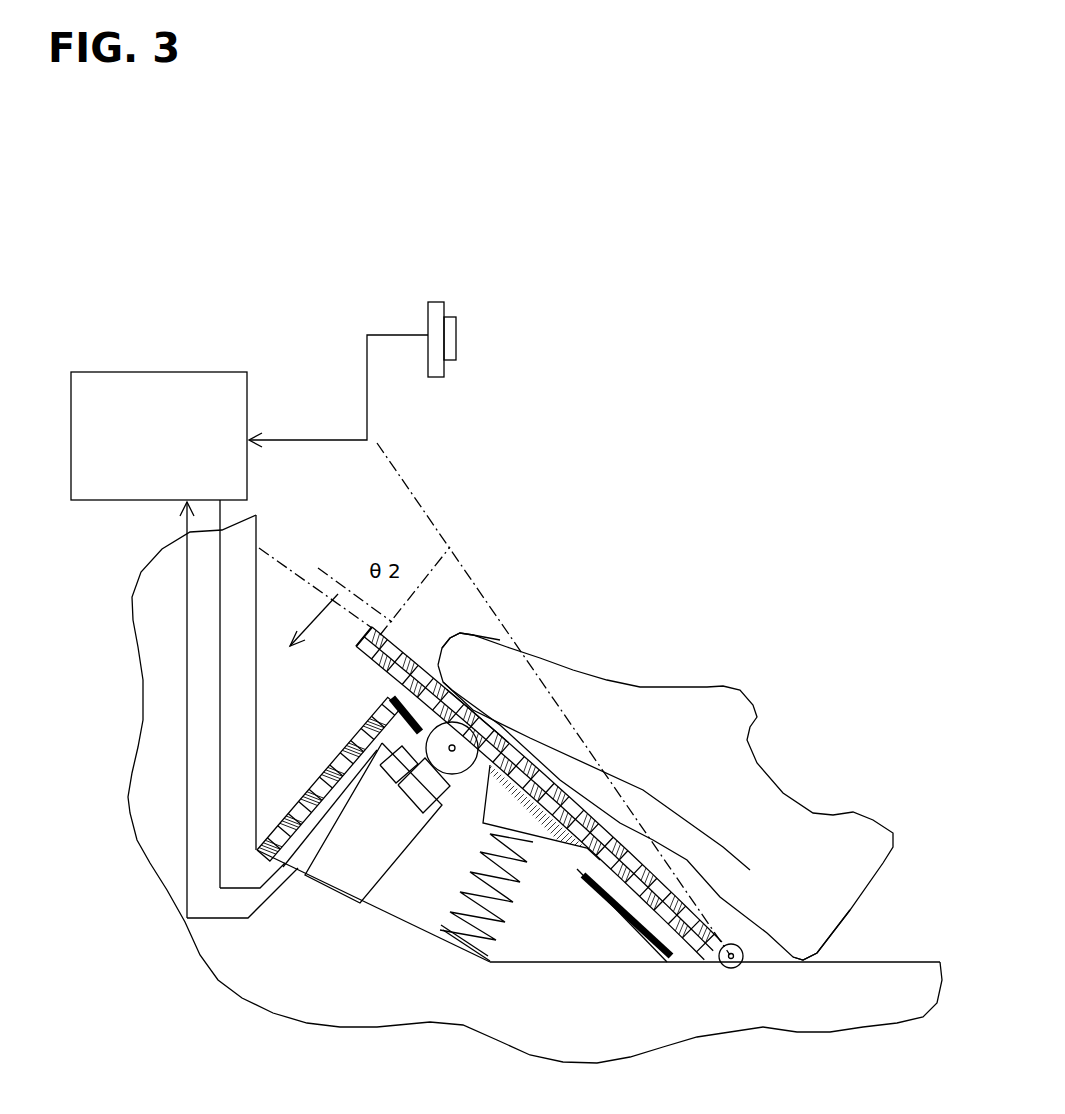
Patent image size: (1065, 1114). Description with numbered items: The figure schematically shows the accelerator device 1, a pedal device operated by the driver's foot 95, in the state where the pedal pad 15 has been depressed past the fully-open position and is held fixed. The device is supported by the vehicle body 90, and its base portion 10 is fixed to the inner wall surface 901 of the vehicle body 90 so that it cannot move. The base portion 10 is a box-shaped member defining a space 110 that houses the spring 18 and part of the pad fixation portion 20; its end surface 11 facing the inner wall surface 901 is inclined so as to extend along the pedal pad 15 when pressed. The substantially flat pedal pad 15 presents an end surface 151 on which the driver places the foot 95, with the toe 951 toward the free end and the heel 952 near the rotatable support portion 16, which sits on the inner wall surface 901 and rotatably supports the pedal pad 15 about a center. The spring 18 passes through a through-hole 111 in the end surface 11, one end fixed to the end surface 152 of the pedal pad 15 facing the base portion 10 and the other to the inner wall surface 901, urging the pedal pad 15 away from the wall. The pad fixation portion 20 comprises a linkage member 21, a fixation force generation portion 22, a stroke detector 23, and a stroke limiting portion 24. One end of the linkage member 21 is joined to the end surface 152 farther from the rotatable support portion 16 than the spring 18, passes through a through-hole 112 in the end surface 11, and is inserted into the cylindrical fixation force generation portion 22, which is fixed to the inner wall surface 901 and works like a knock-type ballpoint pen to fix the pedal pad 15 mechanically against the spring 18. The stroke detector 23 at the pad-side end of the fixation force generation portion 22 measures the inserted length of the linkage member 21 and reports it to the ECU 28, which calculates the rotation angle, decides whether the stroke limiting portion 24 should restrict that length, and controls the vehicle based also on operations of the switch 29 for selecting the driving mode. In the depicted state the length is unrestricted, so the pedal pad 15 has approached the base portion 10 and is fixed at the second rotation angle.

The accelerator device 1 is at (521, 488).
The base portion 10 is at (388, 700).
The end surface 11 is at (424, 672).
The pedal pad 15 is at (602, 814).
The rotatable support portion 16 is at (733, 946).
The spring 18 is at (490, 968).
The pad fixation portion 20 is at (342, 905).
The linkage member 21 is at (423, 736).
The fixation force generation portion 22 is at (395, 868).
The stroke detector 23 is at (420, 798).
The stroke limiting portion 24 is at (395, 768).
The engine control unit (ECU) 28 is at (100, 413).
The switch 29 is at (446, 335).
The vehicle body 90 is at (147, 808).
The foot 95 is at (762, 700).
The space 110 is at (415, 920).
The through-hole 111 is at (563, 868).
The through-hole 112 is at (478, 728).
The end surface 151 is at (388, 633).
The end surface 152 is at (620, 965).
The inner wall surface 901 is at (596, 965).
The toe 951 is at (470, 650).
The heel 952 is at (813, 964).